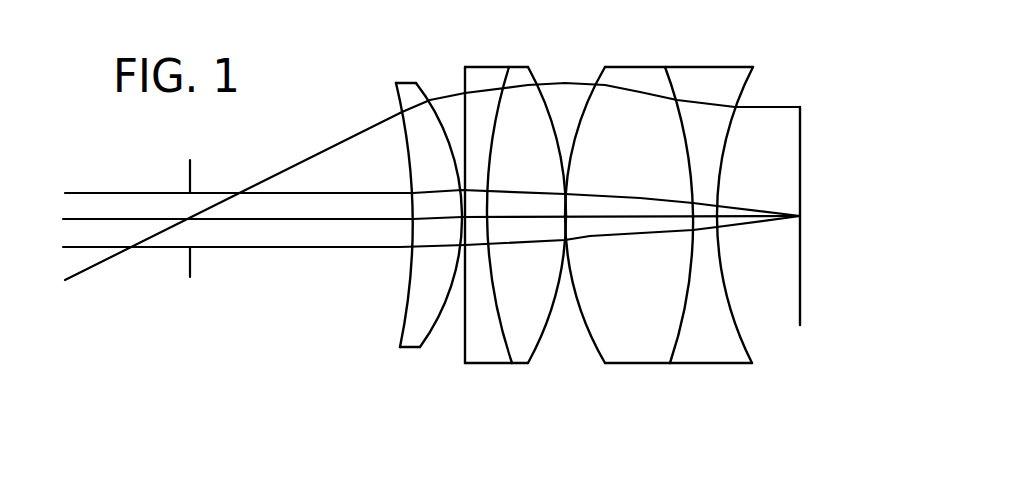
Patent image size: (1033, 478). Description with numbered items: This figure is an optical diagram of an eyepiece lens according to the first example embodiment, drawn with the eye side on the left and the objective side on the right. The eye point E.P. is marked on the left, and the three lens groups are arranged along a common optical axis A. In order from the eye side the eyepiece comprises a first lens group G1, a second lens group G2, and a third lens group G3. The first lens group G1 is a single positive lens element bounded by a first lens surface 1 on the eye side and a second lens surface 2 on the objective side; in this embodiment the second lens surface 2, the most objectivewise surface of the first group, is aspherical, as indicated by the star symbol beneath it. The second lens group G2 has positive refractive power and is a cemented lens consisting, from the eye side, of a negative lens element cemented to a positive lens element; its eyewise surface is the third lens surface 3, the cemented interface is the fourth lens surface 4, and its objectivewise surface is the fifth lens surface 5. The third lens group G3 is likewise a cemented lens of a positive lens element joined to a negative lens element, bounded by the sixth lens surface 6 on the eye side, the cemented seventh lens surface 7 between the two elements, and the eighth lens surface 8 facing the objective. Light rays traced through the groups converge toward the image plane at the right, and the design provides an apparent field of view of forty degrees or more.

The first lens surface 1 is at (402, 318).
The second lens surface 2 is at (432, 328).
The third lens surface 3 is at (460, 352).
The fourth lens surface 4 is at (508, 343).
The fifth lens surface 5 is at (542, 340).
The sixth lens surface 6 is at (598, 352).
The seventh lens surface 7 is at (672, 350).
The eighth lens surface 8 is at (737, 342).
The first lens group G1 is at (408, 214).
The second lens group G2 is at (513, 214).
The third lens group G3 is at (659, 219).
The optical axis A is at (80, 218).
The eye point E.P. is at (191, 236).